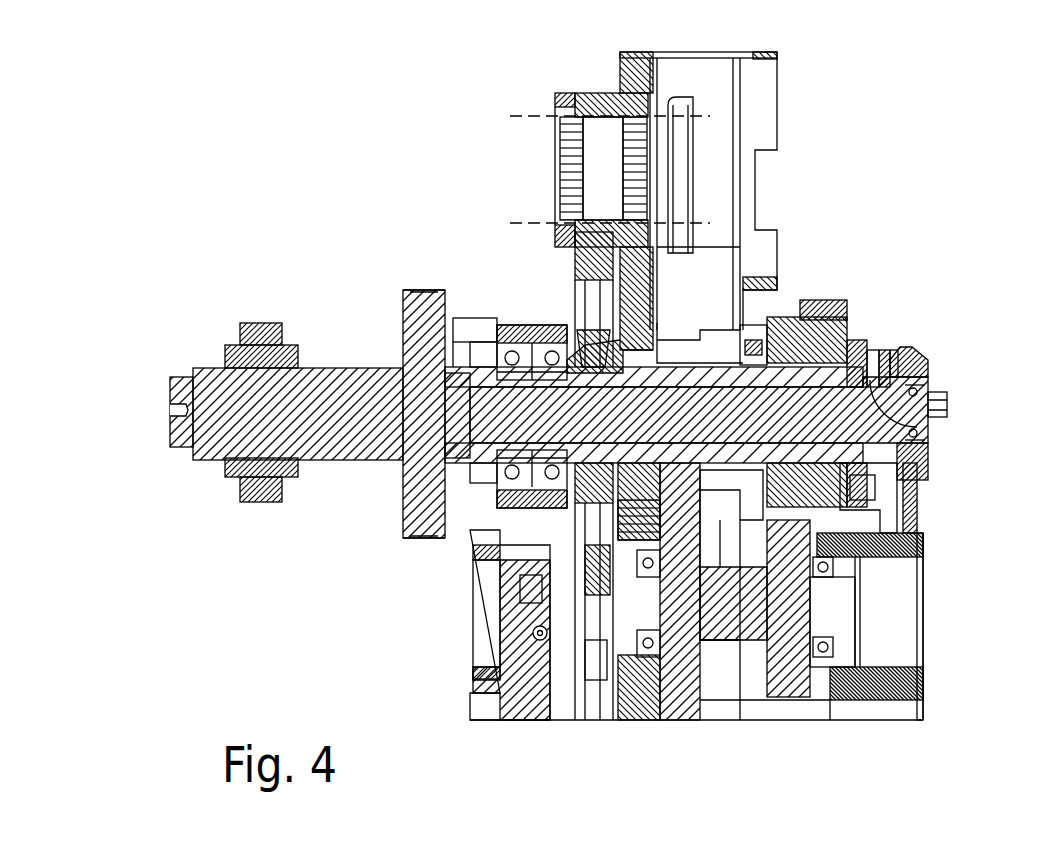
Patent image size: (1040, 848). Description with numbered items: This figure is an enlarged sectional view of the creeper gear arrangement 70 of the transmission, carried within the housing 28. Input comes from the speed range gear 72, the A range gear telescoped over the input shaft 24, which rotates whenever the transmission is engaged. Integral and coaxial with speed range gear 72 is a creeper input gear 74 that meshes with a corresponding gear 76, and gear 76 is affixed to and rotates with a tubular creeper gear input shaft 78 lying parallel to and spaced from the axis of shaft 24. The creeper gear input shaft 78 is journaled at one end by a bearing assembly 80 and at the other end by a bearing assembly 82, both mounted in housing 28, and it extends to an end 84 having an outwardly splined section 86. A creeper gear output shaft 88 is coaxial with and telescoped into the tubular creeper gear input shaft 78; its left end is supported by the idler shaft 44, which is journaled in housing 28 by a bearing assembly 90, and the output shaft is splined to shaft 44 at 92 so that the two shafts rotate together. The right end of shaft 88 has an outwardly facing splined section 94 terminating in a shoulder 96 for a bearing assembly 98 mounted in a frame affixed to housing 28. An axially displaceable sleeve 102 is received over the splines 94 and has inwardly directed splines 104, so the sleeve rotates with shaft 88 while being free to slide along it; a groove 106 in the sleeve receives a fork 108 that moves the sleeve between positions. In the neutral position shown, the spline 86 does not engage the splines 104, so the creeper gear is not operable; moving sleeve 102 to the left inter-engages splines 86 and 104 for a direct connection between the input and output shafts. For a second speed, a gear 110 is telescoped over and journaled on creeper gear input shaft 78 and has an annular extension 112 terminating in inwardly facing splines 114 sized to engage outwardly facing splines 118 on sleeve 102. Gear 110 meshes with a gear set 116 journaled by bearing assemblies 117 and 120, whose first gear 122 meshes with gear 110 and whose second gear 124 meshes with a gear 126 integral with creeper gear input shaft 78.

The input shaft 24 is at (508, 222).
The housing 28 is at (472, 672).
The idler shaft 44 is at (336, 462).
The creeper gear arrangement 70 is at (884, 298).
The speed range gear 72 is at (615, 80).
The creeper input gear 74 is at (570, 95).
The gear 76 is at (580, 265).
The creeper gear input shaft 78 is at (745, 665).
The bearing assembly 80 is at (547, 322).
The bearing assembly 82 is at (765, 337).
The end 84 is at (876, 345).
The outwardly splined section 86 is at (866, 345).
The creeper gear output shaft 88 is at (922, 445).
The bearing assembly 90 is at (493, 357).
The spline connection 92 is at (472, 400).
The outwardly facing splined section 94 is at (925, 362).
The shoulder 96 is at (940, 380).
The bearing assembly 98 is at (945, 402).
The sleeve 102 is at (915, 355).
The inwardly directed splines 104 is at (920, 432).
The groove 106 is at (875, 478).
The fork 108 is at (892, 345).
The gear 110 is at (822, 330).
The annular extension 112 is at (835, 330).
The inwardly facing splines 114 is at (912, 480).
The gear set 116 is at (830, 612).
The bearing assembly 117 is at (627, 690).
The outwardly facing splines 118 is at (855, 340).
The bearing assembly 120 is at (832, 570).
The first gear 122 is at (740, 700).
The second gear 124 is at (680, 722).
The gear 126 is at (688, 292).